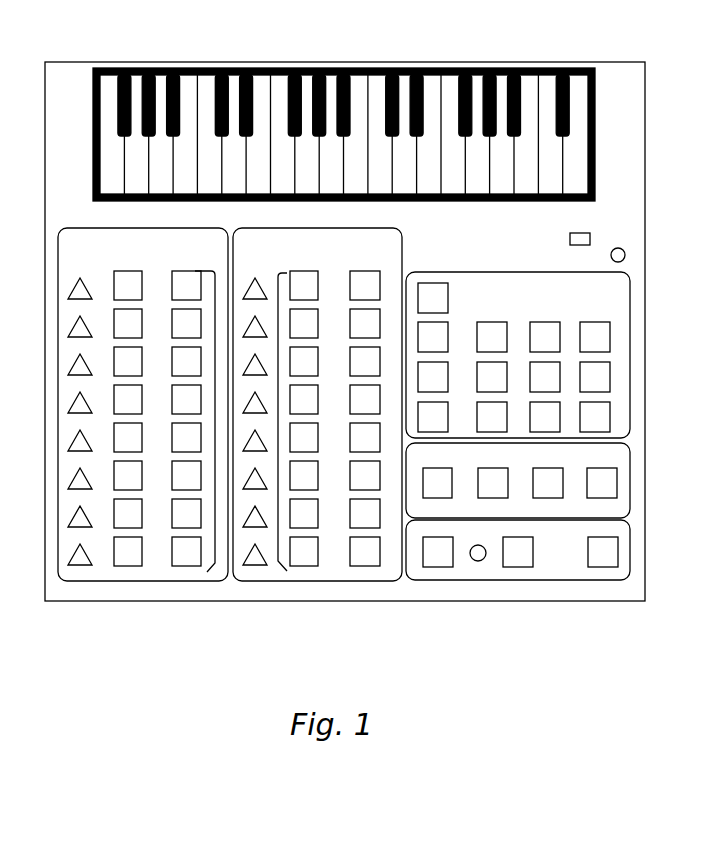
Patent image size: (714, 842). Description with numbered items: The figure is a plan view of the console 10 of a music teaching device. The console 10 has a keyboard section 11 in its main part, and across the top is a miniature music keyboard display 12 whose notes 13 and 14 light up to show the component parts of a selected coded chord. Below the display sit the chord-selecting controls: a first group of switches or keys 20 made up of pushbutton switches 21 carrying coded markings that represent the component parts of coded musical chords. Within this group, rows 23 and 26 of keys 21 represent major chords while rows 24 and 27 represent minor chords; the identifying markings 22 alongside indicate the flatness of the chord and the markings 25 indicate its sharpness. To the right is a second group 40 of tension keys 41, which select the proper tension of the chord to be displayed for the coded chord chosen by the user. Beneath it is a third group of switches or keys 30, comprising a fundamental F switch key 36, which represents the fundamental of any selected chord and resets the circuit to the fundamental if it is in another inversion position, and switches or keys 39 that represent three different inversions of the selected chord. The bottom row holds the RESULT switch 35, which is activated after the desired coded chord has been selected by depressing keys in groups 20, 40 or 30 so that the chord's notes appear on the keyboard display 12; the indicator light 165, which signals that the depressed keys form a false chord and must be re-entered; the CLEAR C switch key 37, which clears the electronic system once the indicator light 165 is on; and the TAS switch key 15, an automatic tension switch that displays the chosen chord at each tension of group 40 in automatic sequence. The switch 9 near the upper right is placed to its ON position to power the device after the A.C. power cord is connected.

The switch 9 is at (590, 233).
The console 10 is at (608, 85).
The keyboard section 11 is at (513, 266).
The miniature music keyboard display 12 is at (444, 57).
The notes 13 is at (360, 90).
The notes 14 is at (223, 74).
The TAS switch key 15 is at (518, 567).
The first group of switches or keys 20 is at (278, 552).
The pushbutton switches 21 is at (172, 276).
The identifying markings 22 is at (68, 448).
The row of keys 23 is at (110, 272).
The row of keys 24 is at (201, 255).
The identifying markings 25 is at (264, 440).
The row of keys 26 is at (324, 262).
The row of keys 27 is at (369, 255).
The third group of switches or keys 30 is at (622, 462).
The RESULT switch 35 is at (437, 567).
The fundamental F switch key 36 is at (445, 468).
The CLEAR C switch key 37 is at (603, 567).
The inversion switches or keys 39 is at (598, 498).
The second group of switches or keys 40 is at (618, 295).
The tension keys 41 is at (485, 322).
The indicator light 165 is at (478, 561).